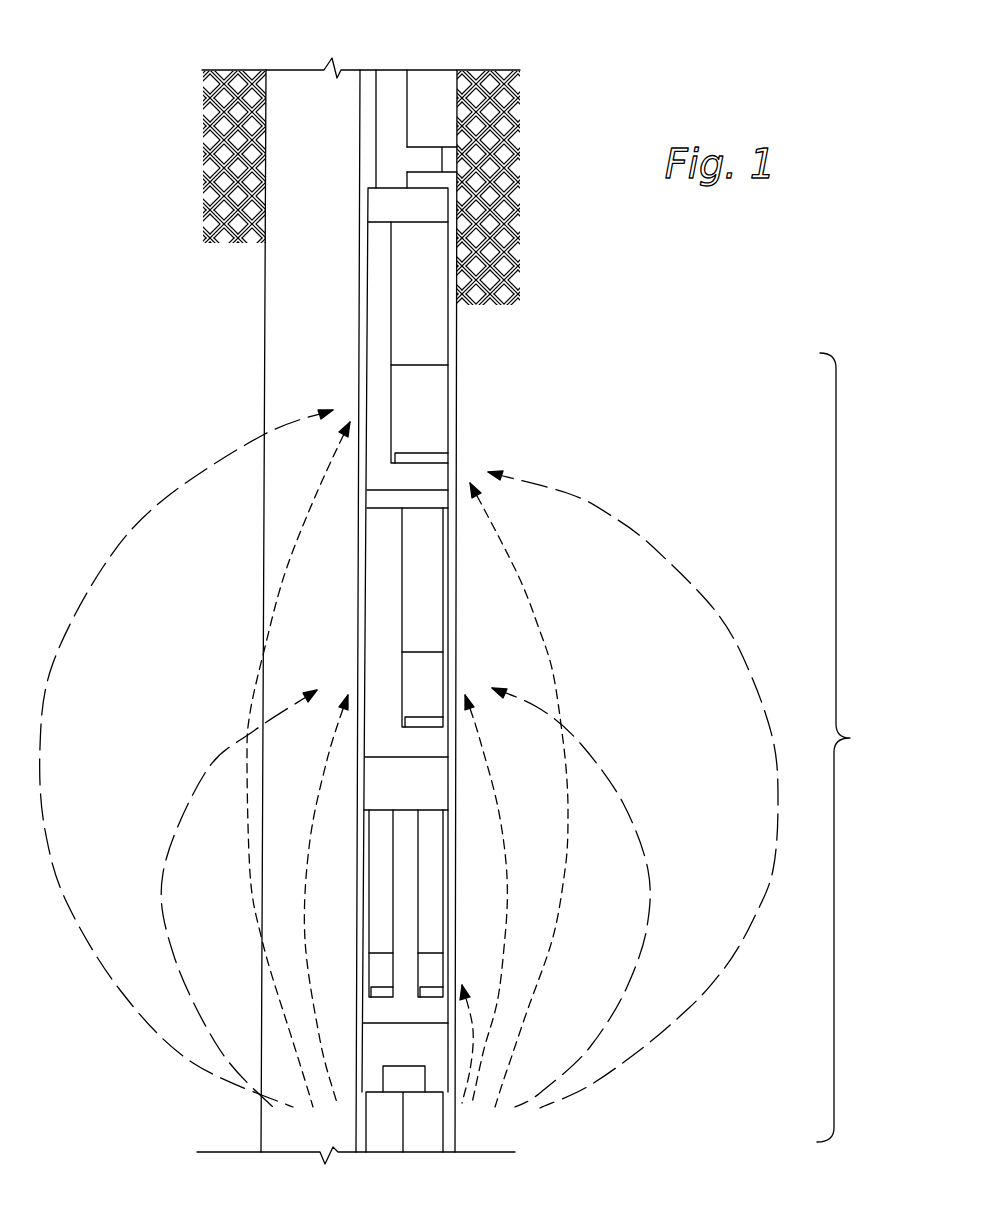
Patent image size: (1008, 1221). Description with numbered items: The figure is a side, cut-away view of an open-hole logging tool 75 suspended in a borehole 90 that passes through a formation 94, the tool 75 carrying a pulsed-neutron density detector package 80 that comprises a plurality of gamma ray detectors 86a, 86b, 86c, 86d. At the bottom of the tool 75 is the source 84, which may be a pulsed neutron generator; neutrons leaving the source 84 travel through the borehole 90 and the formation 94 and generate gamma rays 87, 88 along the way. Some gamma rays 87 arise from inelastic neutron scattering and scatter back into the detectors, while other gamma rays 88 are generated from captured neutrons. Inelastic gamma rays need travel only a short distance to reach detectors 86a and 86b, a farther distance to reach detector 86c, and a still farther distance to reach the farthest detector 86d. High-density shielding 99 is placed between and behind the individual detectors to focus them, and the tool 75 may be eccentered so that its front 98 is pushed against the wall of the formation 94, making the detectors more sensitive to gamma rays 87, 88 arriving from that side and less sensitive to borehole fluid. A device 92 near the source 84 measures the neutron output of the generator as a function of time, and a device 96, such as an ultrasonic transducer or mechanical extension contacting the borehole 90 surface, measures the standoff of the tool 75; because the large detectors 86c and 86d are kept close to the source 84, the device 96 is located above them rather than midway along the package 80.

The open-hole logging tool 75 is at (450, 36).
The pulsed-neutron density detector package 80 is at (624, 665).
The source 84 is at (425, 1132).
The gamma ray detector 86a is at (432, 967).
The gamma ray detector 86b is at (378, 967).
The gamma ray detector 86c is at (430, 665).
The gamma ray detector 86d is at (432, 384).
The gamma rays from inelastic neutron scattering 87 is at (330, 742).
The gamma rays from captured neutrons 88 is at (145, 515).
The borehole 90 is at (328, 234).
The neutron output measuring device 92 is at (393, 1080).
The formation 94 is at (500, 248).
The standoff measuring device 96 is at (414, 158).
The front of the tool 98 is at (458, 422).
The high-density shielding 99 is at (380, 317).